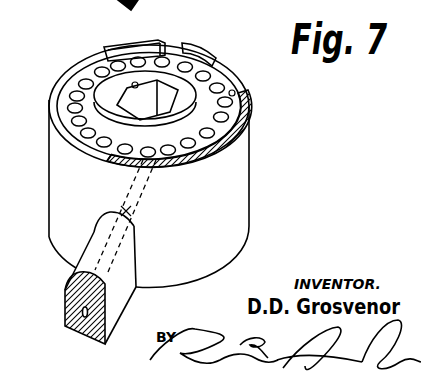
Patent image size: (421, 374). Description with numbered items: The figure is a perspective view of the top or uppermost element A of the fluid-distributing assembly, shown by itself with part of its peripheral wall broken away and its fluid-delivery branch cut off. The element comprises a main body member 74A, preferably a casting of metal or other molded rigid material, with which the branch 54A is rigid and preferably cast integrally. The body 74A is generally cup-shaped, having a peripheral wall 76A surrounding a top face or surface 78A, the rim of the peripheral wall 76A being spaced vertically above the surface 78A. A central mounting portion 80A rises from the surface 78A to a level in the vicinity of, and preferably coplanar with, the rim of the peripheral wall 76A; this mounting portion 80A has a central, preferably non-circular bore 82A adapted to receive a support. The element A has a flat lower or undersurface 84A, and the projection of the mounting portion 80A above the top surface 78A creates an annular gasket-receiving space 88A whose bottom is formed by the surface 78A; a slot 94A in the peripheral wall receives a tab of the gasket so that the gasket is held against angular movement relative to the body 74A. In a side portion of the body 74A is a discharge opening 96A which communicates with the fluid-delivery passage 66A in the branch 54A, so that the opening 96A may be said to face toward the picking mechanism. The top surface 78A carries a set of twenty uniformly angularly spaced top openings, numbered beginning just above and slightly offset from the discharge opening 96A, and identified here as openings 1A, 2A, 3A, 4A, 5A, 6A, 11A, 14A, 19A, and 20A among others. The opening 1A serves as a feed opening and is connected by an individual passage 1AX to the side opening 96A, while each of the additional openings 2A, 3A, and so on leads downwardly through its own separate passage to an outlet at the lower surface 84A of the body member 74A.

The element A is at (250, 149).
The feed opening 1A is at (151, 158).
The top opening 2A is at (170, 155).
The top opening 3A is at (191, 148).
The top opening 4A is at (236, 128).
The top opening 5A is at (245, 115).
The top opening 6A is at (230, 98).
The top opening 11A is at (167, 60).
The top opening 14A is at (82, 83).
The top opening 19A is at (100, 146).
The top opening 20A is at (112, 157).
The individual passage 1AX is at (126, 195).
The branch 54A is at (65, 298).
The passage 66A is at (68, 328).
The main body member 74A is at (50, 185).
The peripheral wall 76A is at (68, 66).
The top face or surface 78A is at (95, 64).
The central mounting portion 80A is at (182, 86).
The central bore 82A is at (133, 83).
The lower or undersurface 84A is at (197, 282).
The annular gasket-receiving space 88A is at (235, 93).
The slot 94A is at (198, 45).
The discharge opening 96A is at (130, 211).